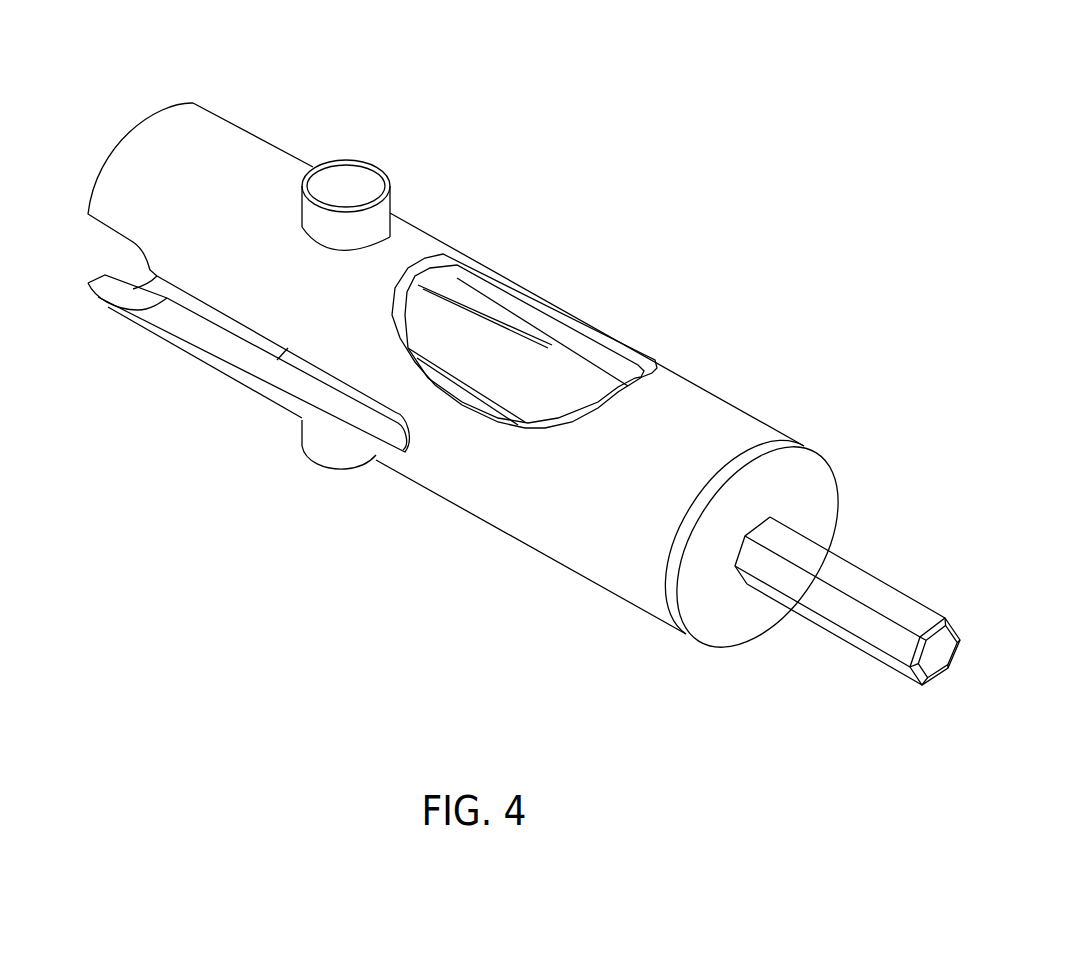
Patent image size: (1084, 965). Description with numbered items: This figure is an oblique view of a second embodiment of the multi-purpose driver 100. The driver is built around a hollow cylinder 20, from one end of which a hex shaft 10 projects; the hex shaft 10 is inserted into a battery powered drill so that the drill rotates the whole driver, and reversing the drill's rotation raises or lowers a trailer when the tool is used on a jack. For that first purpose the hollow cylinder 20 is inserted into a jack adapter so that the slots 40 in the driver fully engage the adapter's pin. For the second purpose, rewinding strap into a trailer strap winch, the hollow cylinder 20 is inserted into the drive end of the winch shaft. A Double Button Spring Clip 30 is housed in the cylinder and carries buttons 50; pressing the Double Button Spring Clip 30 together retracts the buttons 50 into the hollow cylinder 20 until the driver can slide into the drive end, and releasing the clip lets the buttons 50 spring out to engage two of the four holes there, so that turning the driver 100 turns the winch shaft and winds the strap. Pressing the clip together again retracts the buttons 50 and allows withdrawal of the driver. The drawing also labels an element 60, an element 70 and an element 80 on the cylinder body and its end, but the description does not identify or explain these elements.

The hex shaft 10 is at (850, 647).
The hollow cylinder 20 is at (272, 148).
The Double Button Spring Clip 30 is at (332, 382).
The slots 40 is at (117, 292).
The buttons 50 is at (347, 160).
The window opening 60 is at (457, 263).
The end disc 70 is at (858, 473).
The end cap 80 is at (128, 95).
The multi-purpose driver 100 is at (693, 157).